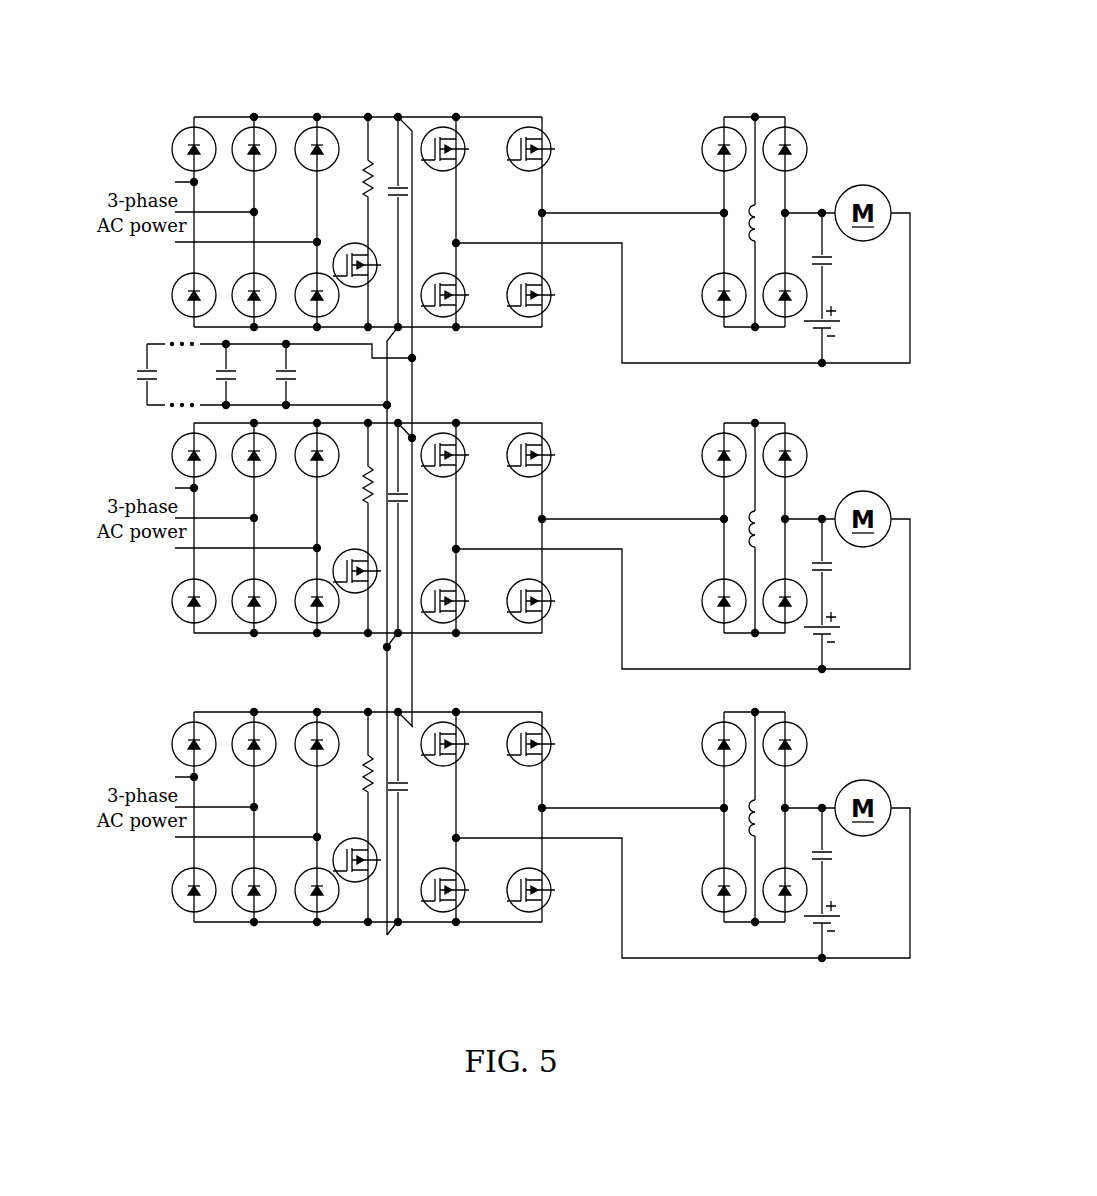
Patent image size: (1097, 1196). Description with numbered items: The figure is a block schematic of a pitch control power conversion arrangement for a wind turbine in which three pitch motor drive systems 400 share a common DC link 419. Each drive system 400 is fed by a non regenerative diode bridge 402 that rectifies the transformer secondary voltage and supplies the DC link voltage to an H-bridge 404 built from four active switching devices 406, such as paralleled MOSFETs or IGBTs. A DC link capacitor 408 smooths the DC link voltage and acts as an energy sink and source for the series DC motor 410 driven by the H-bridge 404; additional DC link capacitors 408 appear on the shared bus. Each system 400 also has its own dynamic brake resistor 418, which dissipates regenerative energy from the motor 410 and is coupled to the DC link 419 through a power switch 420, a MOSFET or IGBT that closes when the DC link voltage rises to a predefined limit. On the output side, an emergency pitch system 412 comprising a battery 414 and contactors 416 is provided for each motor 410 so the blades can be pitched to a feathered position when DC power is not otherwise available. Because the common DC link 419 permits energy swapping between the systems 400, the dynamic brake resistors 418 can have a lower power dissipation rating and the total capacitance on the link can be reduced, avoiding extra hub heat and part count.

The pitch motor drive system 400 is at (660, 50).
The non regenerative diode bridge 402 is at (279, 103).
The H-bridge 404 is at (518, 100).
The active switching devices 406 is at (440, 172).
The DC link capacitor 408 is at (398, 200).
The series DC motor 410 is at (876, 186).
The emergency pitch system 412 is at (840, 293).
The battery 414 is at (815, 331).
The contactors 416 is at (812, 250).
The dynamic brake resistor 418 is at (363, 166).
The DC link 419 is at (412, 130).
The power switch 420 is at (345, 252).